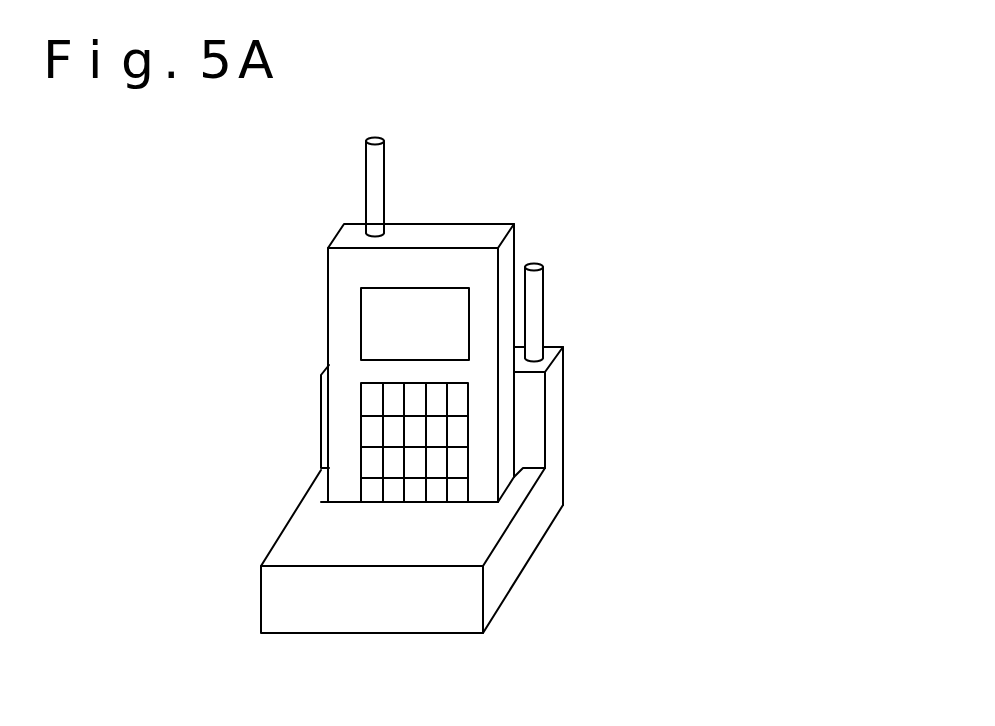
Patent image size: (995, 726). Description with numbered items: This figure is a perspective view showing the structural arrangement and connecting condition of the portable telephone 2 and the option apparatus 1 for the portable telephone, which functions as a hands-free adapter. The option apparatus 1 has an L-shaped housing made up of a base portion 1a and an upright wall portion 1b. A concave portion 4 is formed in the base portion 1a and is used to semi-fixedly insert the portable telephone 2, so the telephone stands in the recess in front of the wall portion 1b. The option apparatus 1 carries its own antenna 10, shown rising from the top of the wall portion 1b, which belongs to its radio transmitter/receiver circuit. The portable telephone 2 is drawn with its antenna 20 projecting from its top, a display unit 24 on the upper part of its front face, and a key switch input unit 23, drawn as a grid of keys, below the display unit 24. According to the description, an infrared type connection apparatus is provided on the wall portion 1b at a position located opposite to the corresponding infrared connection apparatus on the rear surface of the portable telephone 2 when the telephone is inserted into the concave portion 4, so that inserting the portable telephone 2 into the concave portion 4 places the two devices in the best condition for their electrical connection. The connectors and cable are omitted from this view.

The option apparatus for the portable telephone 1 is at (562, 396).
The base portion 1a is at (299, 530).
The wall portion 1b is at (563, 437).
The concave portion 4 is at (545, 471).
The portable telephone 2 is at (515, 255).
The antenna 20 is at (384, 170).
The antenna 10 is at (543, 289).
The display unit 24 is at (372, 318).
The key switch input unit 23 is at (370, 406).